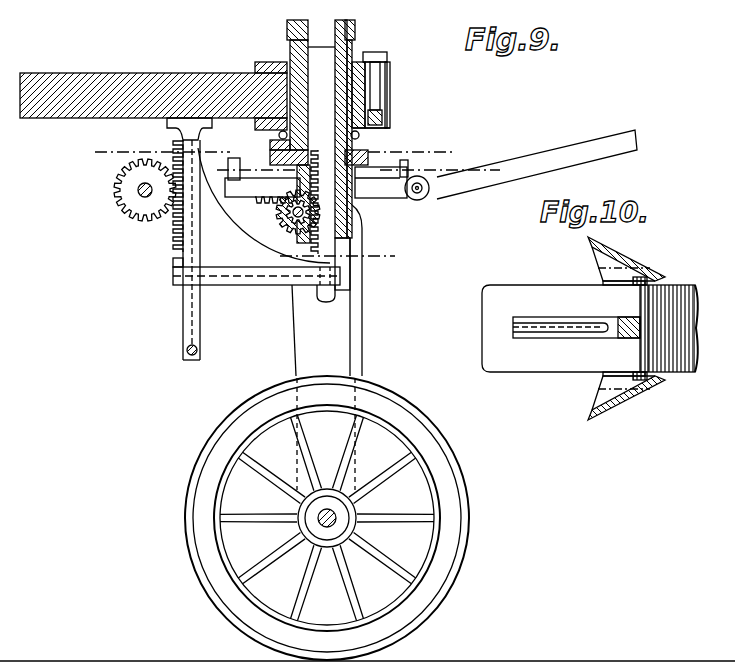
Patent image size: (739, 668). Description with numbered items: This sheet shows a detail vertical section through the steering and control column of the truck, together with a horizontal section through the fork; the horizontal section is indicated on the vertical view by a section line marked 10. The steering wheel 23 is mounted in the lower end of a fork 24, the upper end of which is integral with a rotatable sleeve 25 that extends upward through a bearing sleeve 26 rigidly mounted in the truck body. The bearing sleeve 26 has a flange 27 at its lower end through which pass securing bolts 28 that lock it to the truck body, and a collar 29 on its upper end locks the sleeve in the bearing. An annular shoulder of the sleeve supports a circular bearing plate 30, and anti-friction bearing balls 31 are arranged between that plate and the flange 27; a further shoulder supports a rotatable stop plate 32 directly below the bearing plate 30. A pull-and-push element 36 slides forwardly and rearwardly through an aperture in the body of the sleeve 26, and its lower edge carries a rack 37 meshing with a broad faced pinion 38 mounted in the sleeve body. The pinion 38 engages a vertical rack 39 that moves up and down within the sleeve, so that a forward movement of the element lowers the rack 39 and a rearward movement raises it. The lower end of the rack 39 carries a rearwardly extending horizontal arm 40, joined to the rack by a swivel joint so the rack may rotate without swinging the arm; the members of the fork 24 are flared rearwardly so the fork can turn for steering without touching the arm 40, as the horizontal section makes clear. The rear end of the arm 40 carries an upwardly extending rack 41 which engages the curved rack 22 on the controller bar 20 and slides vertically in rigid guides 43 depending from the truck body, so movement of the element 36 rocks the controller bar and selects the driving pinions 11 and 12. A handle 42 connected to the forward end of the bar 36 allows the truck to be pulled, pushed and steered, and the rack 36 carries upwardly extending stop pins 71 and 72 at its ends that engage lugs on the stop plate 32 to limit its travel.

In FIG. 9, the section line 10 is at (346, 255).
In FIG. 9, the driving pinion 11 is at (276, 146).
In FIG. 9, the driving pinion 12 is at (495, 153).
In FIG. 9, the controller bar 20 is at (140, 196).
In FIG. 9, the curved rack 22 is at (120, 192).
In FIG. 9, the steering wheel 23 is at (455, 531).
In FIG. 10, the steering wheel 23 is at (527, 362).
In FIG. 9, the fork 24 is at (350, 356).
In FIG. 10, the fork 24 is at (625, 264).
In FIG. 9, the rotatable sleeve 25 is at (356, 206).
In FIG. 9, the bearing sleeve 26 is at (356, 56).
In FIG. 9, the flange 27 is at (368, 130).
In FIG. 9, the securing bolts 28 is at (388, 84).
In FIG. 9, the collar 29 is at (289, 24).
In FIG. 9, the bearing plate 30 is at (362, 136).
In FIG. 9, the anti-friction bearing balls 31 is at (390, 107).
In FIG. 9, the stop plate 32 is at (392, 186).
In FIG. 9, the pull-and-push element 36 is at (262, 200).
In FIG. 9, the rack 37 is at (284, 228).
In FIG. 9, the pinion 38 is at (297, 243).
In FIG. 9, the vertical rack 39 is at (332, 262).
In FIG. 10, the vertical rack 39 is at (626, 333).
In FIG. 9, the horizontal arm 40 is at (229, 286).
In FIG. 10, the horizontal arm 40 is at (513, 326).
In FIG. 9, the rack 41 is at (172, 263).
In FIG. 9, the handle 42 is at (562, 152).
In FIG. 9, the guides 43 is at (192, 300).
In FIG. 9, the stop pin 71 is at (240, 170).
In FIG. 9, the stop pin 72 is at (409, 170).